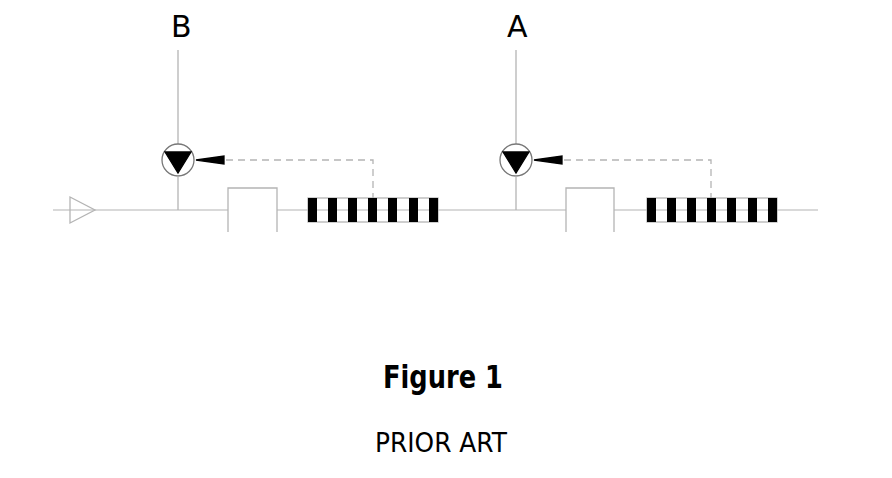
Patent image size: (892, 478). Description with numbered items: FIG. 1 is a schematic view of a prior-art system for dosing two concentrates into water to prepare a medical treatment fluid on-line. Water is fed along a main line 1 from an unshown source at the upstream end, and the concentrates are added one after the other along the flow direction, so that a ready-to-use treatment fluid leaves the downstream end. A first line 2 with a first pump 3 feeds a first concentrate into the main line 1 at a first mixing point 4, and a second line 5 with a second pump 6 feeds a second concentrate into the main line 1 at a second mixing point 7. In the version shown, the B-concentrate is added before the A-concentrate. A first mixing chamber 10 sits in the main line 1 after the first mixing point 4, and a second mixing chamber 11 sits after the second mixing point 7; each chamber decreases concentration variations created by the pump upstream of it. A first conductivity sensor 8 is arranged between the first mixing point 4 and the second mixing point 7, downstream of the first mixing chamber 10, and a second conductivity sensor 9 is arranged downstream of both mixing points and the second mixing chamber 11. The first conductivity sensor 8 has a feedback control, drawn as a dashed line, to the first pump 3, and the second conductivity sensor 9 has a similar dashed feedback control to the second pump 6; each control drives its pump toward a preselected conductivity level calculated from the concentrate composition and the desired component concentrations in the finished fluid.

The main line 1 is at (136, 211).
The first line 2 is at (178, 88).
The first pump 3 is at (190, 150).
The first mixing point 4 is at (178, 212).
The second line 5 is at (516, 88).
The second pump 6 is at (528, 150).
The second mixing point 7 is at (515, 212).
The first conductivity sensor 8 is at (366, 222).
The second conductivity sensor 9 is at (703, 222).
The first mixing chamber 10 is at (247, 232).
The second mixing chamber 11 is at (585, 232).